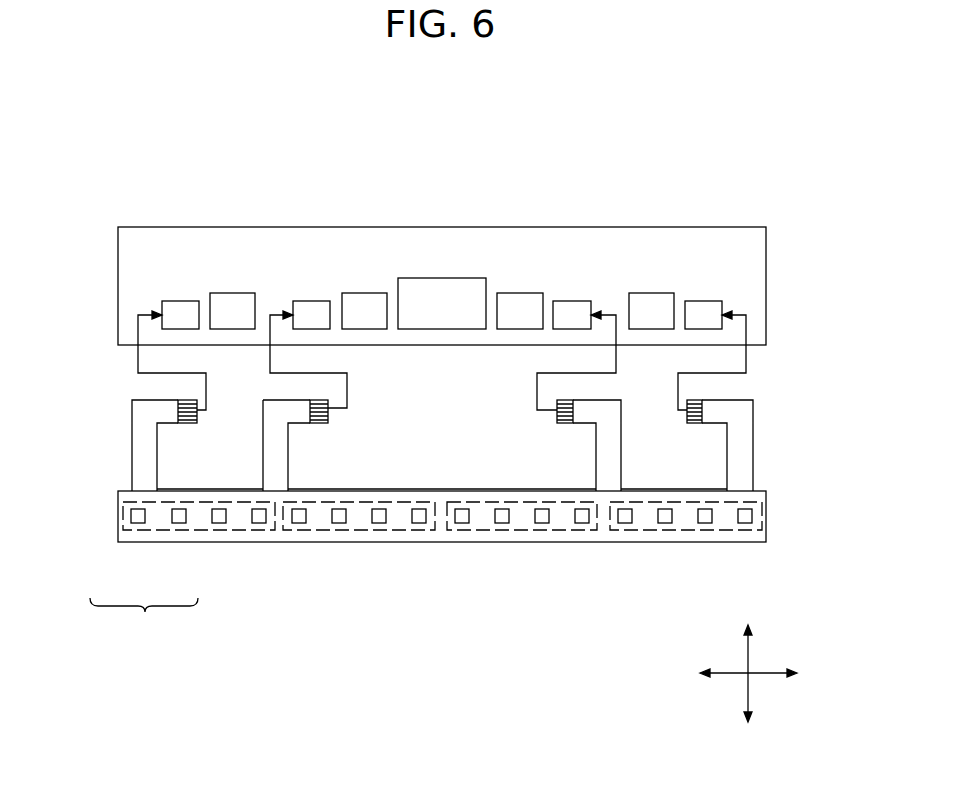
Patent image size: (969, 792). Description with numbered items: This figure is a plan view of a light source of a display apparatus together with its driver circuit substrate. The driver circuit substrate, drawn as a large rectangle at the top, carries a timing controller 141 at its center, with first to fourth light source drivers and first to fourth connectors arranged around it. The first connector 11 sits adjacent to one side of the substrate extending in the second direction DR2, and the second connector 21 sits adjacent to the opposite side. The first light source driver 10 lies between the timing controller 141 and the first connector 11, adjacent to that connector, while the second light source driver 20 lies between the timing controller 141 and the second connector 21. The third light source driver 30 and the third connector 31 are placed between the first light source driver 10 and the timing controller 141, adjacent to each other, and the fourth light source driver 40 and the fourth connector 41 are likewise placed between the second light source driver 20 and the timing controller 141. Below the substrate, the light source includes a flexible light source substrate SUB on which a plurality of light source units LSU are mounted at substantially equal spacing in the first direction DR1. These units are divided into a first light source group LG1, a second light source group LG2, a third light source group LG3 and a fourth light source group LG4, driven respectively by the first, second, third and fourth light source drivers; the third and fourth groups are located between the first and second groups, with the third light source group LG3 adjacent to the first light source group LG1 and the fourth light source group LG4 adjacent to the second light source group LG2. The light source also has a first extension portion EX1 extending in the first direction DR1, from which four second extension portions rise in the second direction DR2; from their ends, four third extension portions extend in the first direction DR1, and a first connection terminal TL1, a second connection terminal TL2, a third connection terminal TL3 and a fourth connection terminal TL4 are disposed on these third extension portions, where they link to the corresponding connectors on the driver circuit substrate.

The first connector 11 is at (181, 300).
The first light source driver 10 is at (233, 292).
The third connector 31 is at (312, 300).
The third light source driver 30 is at (364, 292).
The timing controller 141 is at (442, 277).
The fourth light source driver 40 is at (520, 292).
The fourth connector 41 is at (572, 300).
The second light source driver 20 is at (651, 292).
The second connector 21 is at (704, 300).
The first connection terminal TL1 is at (185, 424).
The second connection terminal TL2 is at (695, 424).
The third connection terminal TL3 is at (322, 427).
The fourth connection terminal TL4 is at (560, 426).
The first extension portion EX1 is at (405, 494).
The light source substrate SUB is at (123, 493).
The light source unit LSU is at (179, 524).
The first light source group LG1 is at (233, 531).
The second light source group LG2 is at (646, 531).
The third light source group LG3 is at (342, 531).
The fourth light source group LG4 is at (483, 531).
The first direction DR1 is at (767, 673).
The second direction DR2 is at (748, 663).